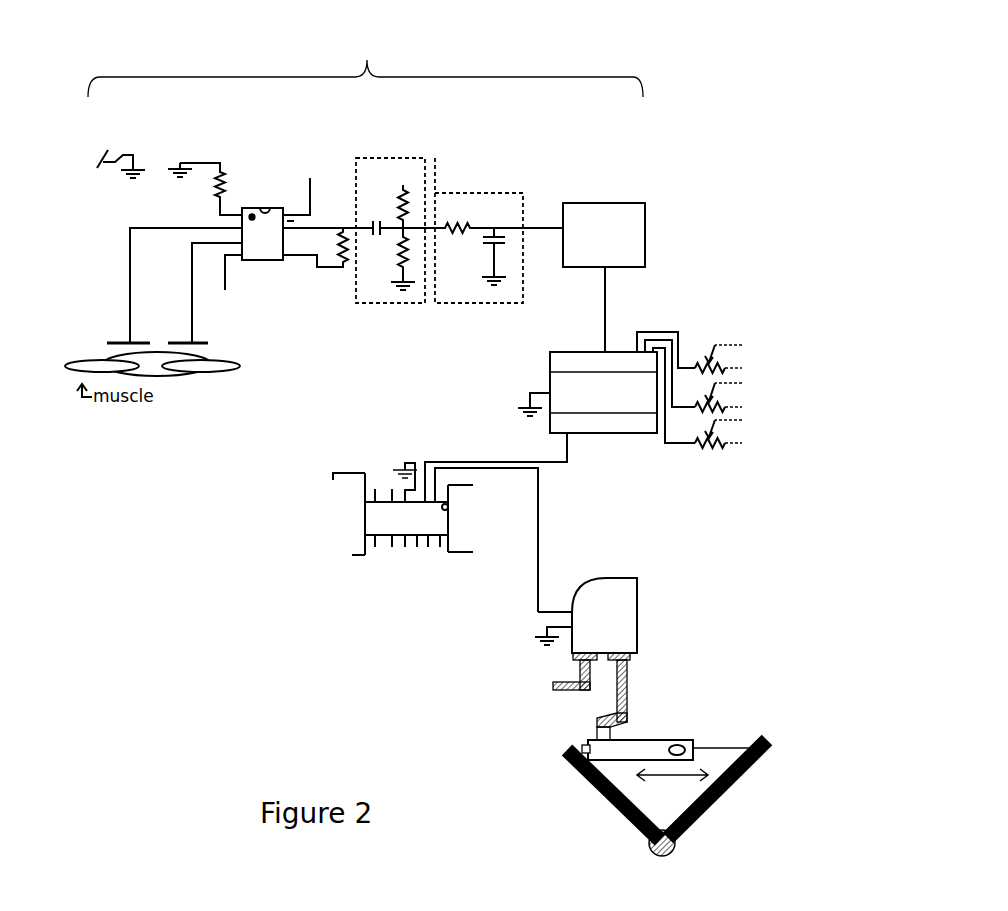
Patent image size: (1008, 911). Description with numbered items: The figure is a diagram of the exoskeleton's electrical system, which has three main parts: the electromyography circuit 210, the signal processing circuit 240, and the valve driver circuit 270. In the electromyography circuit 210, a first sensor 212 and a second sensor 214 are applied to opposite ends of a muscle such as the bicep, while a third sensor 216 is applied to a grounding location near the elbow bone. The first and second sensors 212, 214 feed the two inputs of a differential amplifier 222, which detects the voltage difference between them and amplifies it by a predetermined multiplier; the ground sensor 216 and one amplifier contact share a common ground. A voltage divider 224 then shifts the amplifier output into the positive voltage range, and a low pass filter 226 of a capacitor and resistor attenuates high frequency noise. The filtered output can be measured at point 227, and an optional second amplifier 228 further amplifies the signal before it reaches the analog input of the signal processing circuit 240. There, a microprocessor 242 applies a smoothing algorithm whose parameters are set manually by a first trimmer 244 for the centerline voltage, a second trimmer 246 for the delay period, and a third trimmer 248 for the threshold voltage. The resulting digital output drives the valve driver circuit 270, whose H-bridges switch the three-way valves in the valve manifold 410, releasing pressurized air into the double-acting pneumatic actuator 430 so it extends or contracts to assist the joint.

The electromyography circuit 210 is at (365, 49).
The first sensor 212 is at (118, 340).
The second sensor 214 is at (178, 341).
The third sensor 216 is at (110, 172).
The differential amplifier 222 is at (280, 212).
The voltage divider 224 is at (372, 172).
The low pass filter 226 is at (448, 203).
The point 227 is at (538, 225).
The second amplifier 228 is at (623, 212).
The signal processing circuit 240 is at (751, 365).
The microprocessor 242 is at (555, 382).
The first trimmer 244 is at (772, 356).
The second trimmer 246 is at (780, 395).
The third trimmer 248 is at (770, 431).
The valve driver circuit 270 is at (408, 570).
The valve manifold 410 is at (628, 603).
The double-acting pneumatic actuator 430 is at (633, 748).